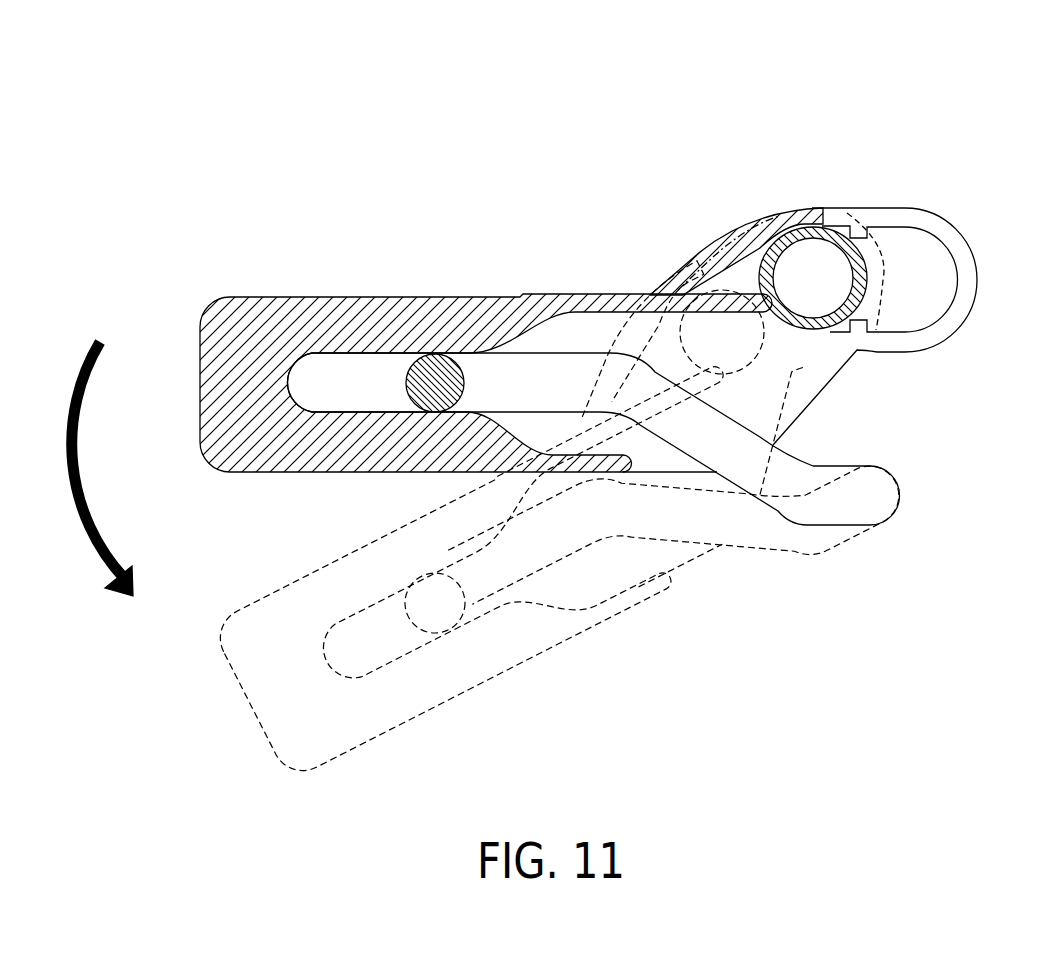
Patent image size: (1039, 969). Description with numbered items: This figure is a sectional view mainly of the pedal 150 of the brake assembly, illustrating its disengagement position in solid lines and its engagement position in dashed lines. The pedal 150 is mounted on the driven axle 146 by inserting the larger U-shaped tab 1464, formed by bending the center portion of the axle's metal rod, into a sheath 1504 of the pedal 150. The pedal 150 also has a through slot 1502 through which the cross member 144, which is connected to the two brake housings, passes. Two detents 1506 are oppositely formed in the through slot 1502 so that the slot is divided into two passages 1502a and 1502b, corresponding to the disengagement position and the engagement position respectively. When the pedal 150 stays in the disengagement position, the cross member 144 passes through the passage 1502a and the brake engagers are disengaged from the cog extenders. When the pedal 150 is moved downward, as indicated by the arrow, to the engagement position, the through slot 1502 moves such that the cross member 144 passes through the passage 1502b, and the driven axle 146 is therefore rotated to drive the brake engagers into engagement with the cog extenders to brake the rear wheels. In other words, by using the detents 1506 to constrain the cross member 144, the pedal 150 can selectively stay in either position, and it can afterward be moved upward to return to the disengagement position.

The pedal 150 is at (320, 333).
The sheath 1504 is at (385, 353).
The cross member 144 is at (827, 333).
The U-shaped tab 1464 is at (552, 382).
The driven axle 146 is at (855, 505).
The detent 1506 is at (850, 240).
The through slot 1502 is at (816, 205).
The passage 1502a is at (836, 224).
The passage 1502b is at (933, 227).